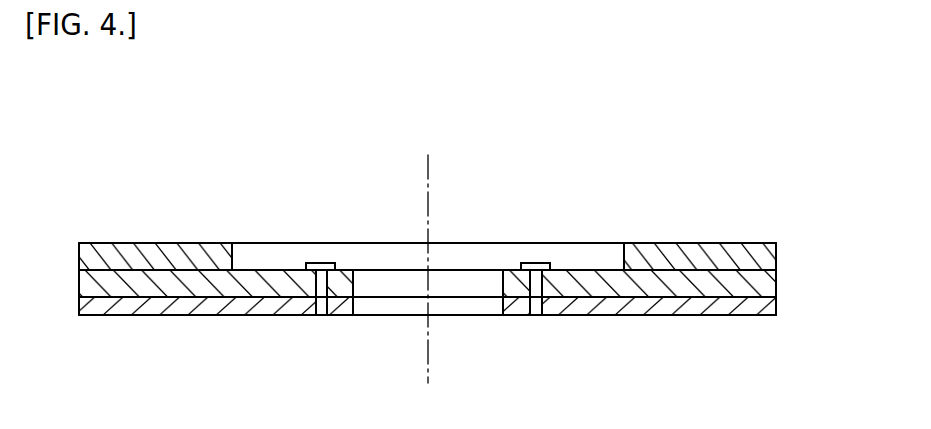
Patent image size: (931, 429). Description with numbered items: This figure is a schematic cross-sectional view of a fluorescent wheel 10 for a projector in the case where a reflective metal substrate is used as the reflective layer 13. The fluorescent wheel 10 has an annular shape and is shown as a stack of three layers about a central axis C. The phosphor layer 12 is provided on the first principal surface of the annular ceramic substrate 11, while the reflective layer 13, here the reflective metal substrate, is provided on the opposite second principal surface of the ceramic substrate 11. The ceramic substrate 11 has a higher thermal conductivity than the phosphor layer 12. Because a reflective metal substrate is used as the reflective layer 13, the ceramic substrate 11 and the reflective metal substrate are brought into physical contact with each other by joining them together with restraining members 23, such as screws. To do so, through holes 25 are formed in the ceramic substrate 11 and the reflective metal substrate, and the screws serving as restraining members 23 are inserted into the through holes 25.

The fluorescent wheel 10 is at (723, 157).
The ceramic substrate 11 is at (777, 281).
The phosphor layer 12 is at (730, 243).
The reflective layer 13 is at (777, 308).
The restraining member 23 is at (325, 262).
The through hole 25 is at (314, 292).
The center axis C is at (428, 185).